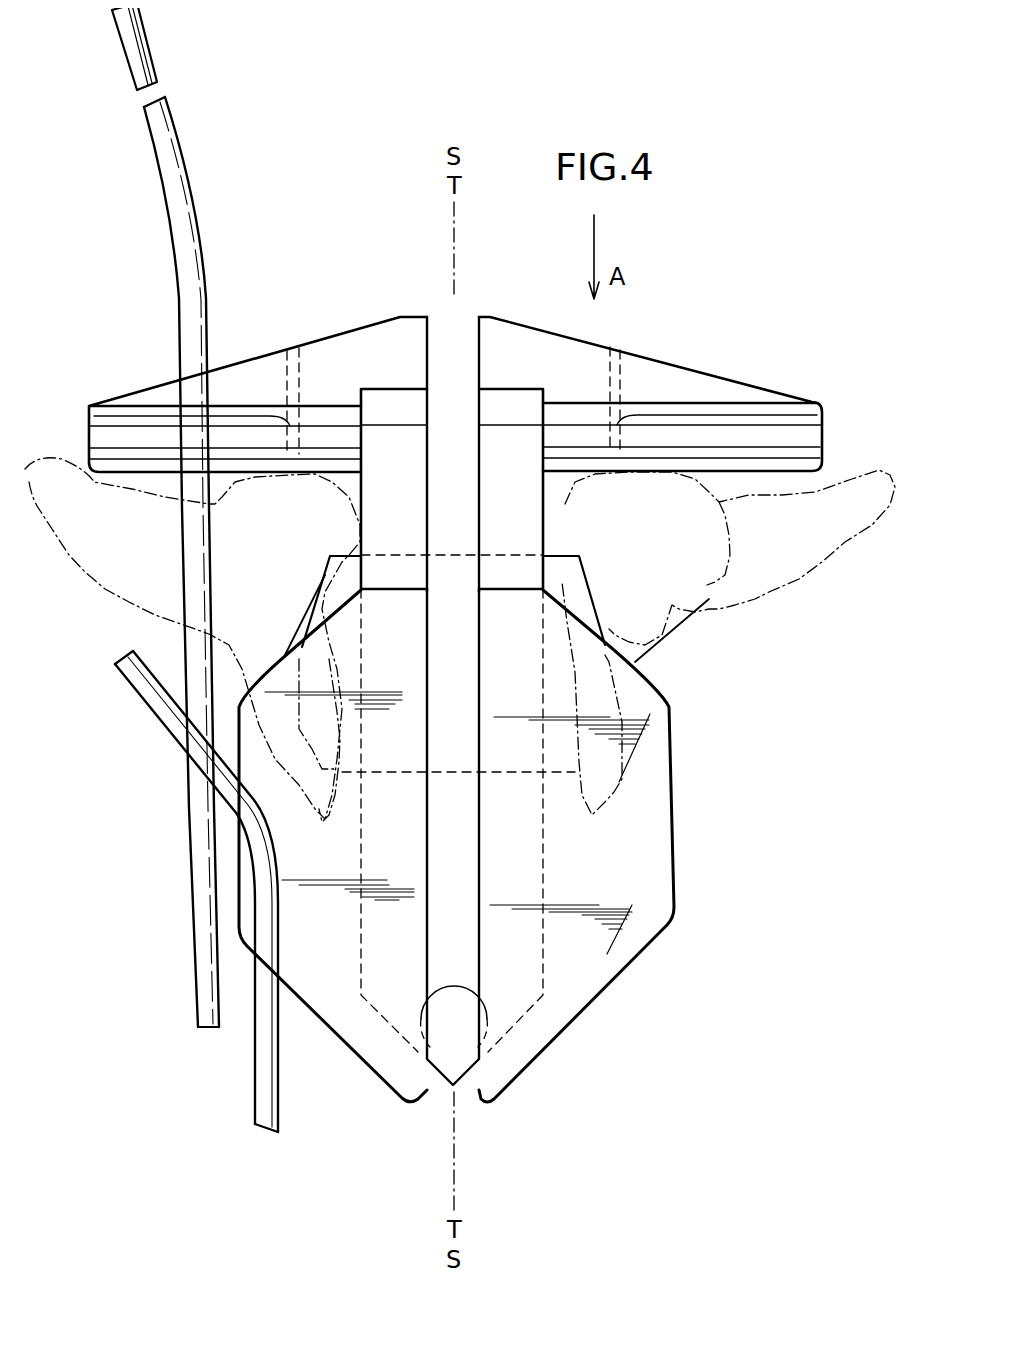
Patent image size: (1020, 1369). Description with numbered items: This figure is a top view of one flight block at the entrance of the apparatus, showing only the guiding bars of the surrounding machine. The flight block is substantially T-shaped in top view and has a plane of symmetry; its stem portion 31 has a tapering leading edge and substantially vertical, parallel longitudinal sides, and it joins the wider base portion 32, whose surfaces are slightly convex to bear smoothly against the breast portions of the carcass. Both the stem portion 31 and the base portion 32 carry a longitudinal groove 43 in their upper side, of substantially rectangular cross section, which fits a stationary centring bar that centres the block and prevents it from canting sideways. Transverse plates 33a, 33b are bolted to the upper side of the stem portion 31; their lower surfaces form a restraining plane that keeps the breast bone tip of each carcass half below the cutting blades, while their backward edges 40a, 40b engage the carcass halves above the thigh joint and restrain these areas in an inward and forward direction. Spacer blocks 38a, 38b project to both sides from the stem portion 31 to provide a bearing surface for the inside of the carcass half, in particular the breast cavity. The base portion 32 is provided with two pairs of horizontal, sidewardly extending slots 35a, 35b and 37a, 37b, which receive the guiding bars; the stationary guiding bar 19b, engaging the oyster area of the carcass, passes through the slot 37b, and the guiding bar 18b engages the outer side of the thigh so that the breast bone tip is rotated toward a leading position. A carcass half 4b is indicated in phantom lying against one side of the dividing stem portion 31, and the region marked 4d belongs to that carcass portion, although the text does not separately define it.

The guiding bar 19b is at (177, 160).
The guiding bar 18b is at (153, 702).
The stem portion 31 is at (400, 486).
The base portion 32 is at (528, 358).
The longitudinal groove 43 is at (460, 751).
The slot 35a is at (738, 415).
The slot 35b is at (147, 418).
The slot 37a is at (800, 450).
The slot 37b is at (153, 453).
The spacer block 38a is at (594, 598).
The spacer block 38b is at (320, 585).
The backward edge 40a is at (673, 643).
The backward edge 40b is at (283, 648).
The transverse plate 33a is at (602, 853).
The transverse plate 33b is at (312, 849).
The carcass half 4b is at (225, 530).
The body portion 4d is at (763, 613).